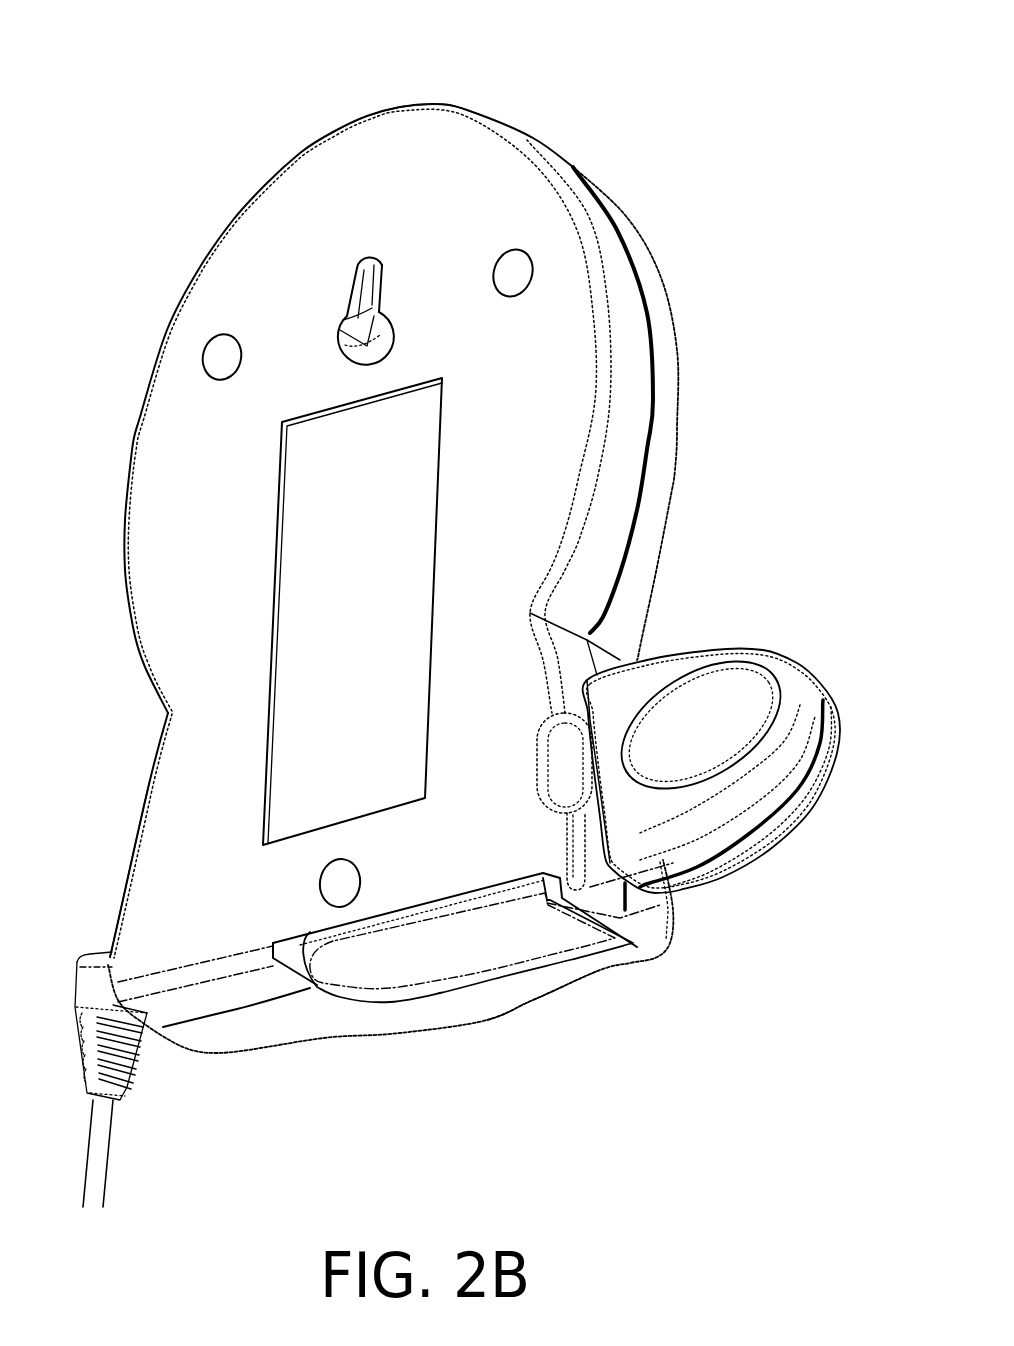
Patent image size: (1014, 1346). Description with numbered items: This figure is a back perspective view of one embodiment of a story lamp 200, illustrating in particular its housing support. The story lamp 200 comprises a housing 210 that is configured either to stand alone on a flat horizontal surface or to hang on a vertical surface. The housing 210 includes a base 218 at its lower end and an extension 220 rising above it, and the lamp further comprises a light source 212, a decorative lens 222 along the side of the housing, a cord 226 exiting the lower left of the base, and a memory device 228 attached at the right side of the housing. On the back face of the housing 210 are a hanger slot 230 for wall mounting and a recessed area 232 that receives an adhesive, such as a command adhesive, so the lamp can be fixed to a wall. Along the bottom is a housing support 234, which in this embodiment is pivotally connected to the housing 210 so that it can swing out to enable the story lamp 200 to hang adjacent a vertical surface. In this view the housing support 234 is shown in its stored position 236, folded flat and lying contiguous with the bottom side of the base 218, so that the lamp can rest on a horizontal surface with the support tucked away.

The story lamp 200 is at (152, 68).
The housing 210 is at (150, 462).
The light source 212 is at (730, 211).
The base 218 is at (150, 852).
The extension 220 is at (467, 108).
The decorative lens 222 is at (650, 520).
The cord 226 is at (90, 1177).
The memory device 228 is at (780, 670).
The hanger slot 230 is at (353, 320).
The recessed area 232 is at (292, 608).
The housing support 234 is at (445, 967).
The stored position 236 is at (635, 1003).